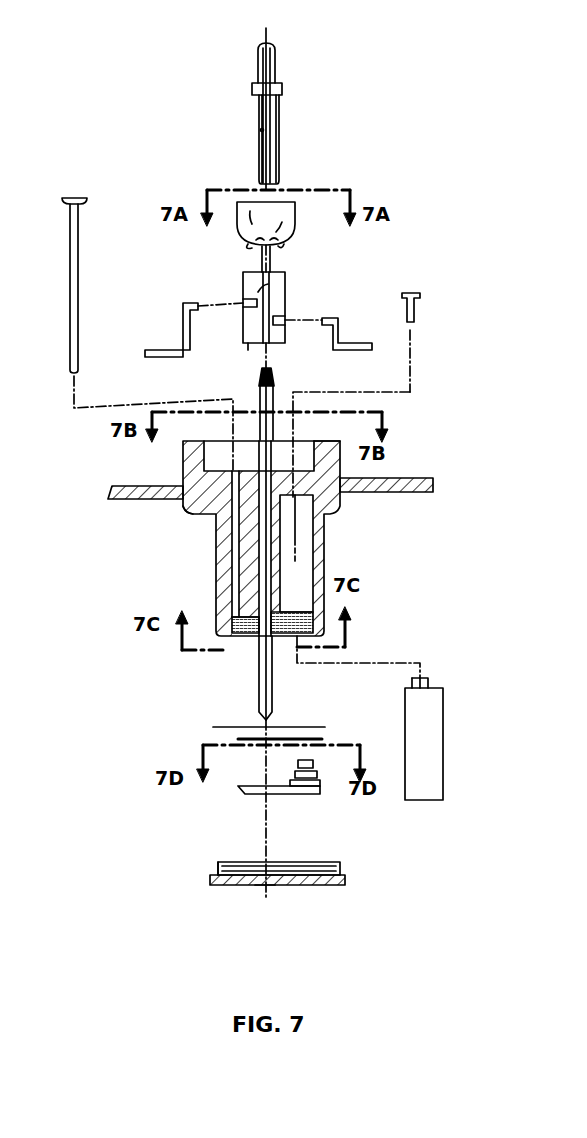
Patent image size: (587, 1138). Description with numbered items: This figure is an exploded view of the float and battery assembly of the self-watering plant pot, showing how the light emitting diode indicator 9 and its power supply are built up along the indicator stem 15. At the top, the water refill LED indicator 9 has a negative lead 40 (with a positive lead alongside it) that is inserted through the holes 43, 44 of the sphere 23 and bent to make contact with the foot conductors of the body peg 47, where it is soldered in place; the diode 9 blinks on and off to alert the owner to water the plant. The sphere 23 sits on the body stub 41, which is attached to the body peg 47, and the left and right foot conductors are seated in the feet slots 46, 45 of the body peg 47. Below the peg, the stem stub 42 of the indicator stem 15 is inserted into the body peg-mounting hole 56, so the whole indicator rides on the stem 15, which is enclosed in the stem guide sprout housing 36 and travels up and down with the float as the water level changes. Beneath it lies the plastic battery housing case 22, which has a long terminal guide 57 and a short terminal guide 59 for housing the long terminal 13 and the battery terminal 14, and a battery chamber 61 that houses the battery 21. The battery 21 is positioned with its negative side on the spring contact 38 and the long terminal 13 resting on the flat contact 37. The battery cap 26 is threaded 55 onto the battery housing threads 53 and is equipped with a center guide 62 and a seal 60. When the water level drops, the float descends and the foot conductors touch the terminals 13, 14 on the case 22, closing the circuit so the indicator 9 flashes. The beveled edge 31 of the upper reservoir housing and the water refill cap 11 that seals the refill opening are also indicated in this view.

The Light Emitting Diode indicator 9 is at (277, 57).
The negative lead 40 is at (280, 138).
The flat contact 37 is at (259, 142).
The sphere 23 is at (296, 215).
The hole 44 is at (250, 244).
The hole 43 is at (285, 242).
The body stub 41 is at (258, 262).
The body peg 47 is at (280, 298).
The feet slot 46 is at (269, 285).
The feet slot 45 is at (165, 350).
The battery terminal 14 is at (340, 331).
The long terminal 13 is at (70, 272).
The body peg-mounting hole 56 is at (255, 348).
The stem stub 42 is at (272, 372).
The battery housing case 22 is at (216, 563).
The stem guide sprout housing 36 is at (327, 448).
The long terminal guide 57 is at (181, 508).
The battery chamber 61 is at (297, 538).
The beveled edge 31 is at (130, 487).
The short terminal guide 59 is at (343, 497).
The battery housing threads 53 is at (247, 644).
The indicator stem 15 is at (274, 693).
The battery 21 is at (444, 715).
The seal 60 is at (223, 733).
The spring contact 38 is at (300, 795).
The threads 55 is at (303, 862).
The battery cap 26 is at (313, 886).
The water refill cap 11 is at (218, 866).
The center guide 62 is at (263, 886).